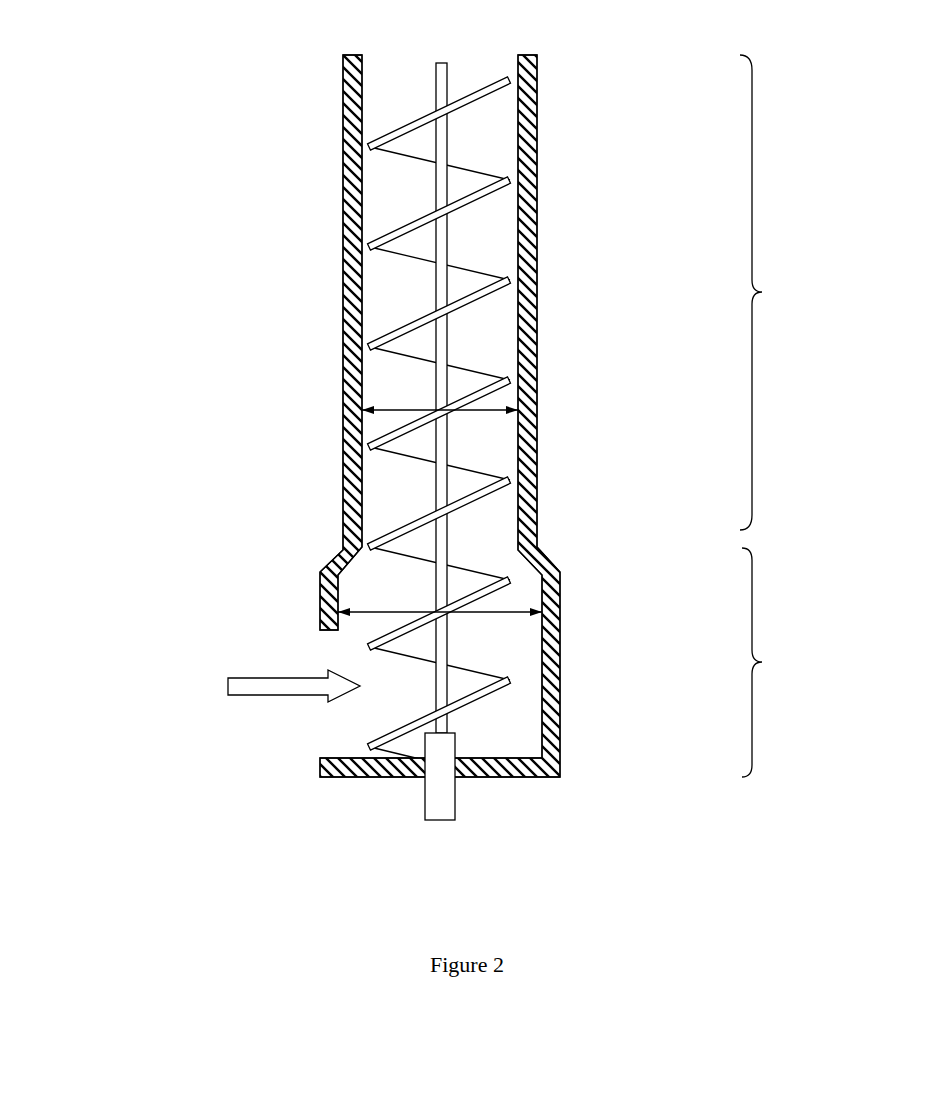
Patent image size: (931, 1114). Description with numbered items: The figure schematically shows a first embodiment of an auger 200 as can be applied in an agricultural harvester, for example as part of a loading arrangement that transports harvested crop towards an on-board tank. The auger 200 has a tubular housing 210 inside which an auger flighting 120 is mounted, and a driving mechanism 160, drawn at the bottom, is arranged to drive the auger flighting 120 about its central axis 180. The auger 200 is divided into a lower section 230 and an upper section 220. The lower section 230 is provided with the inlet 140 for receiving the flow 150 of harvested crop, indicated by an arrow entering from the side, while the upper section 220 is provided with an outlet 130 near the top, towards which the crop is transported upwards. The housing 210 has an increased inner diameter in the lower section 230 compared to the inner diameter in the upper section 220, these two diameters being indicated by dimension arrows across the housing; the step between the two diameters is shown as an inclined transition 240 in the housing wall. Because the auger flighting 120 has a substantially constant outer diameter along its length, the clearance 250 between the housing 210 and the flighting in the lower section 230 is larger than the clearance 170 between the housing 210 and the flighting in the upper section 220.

The auger 200 is at (196, 117).
The auger flighting 120 is at (407, 318).
The outlet 130 is at (472, 55).
The inlet 140 is at (360, 663).
The flow of harvested crop 150 is at (268, 683).
The driving mechanism 160 is at (447, 798).
The clearance 170 is at (507, 378).
The central axis 180 is at (438, 483).
The tubular housing 210 is at (537, 267).
The upper section 220 is at (774, 292).
The lower section 230 is at (781, 662).
The transition step 240 is at (540, 560).
The clearance 250 is at (517, 683).